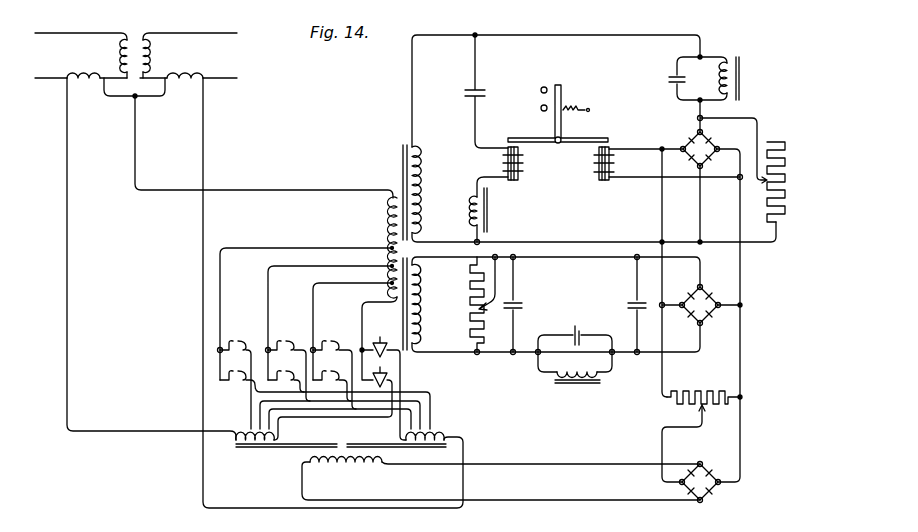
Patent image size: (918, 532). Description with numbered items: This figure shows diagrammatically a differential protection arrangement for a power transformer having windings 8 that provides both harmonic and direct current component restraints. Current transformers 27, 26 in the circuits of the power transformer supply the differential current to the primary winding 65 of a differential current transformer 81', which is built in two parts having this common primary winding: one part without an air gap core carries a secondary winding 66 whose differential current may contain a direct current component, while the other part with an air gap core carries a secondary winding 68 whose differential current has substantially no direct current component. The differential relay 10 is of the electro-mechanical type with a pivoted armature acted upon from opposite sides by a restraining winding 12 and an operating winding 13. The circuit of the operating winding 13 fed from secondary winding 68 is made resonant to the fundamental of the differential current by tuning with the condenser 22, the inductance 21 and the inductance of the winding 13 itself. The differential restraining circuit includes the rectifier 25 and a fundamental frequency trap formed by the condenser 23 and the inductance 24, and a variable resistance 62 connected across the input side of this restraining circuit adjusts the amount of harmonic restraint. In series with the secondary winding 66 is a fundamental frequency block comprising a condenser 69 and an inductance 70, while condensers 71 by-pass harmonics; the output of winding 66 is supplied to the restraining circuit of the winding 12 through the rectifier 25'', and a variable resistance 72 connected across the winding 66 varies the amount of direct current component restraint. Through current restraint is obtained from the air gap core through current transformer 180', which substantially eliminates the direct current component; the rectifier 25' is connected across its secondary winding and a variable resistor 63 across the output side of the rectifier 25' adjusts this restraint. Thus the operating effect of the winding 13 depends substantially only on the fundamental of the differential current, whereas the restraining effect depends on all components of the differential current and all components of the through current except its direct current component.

The current transformer 27 is at (123, 55).
The current transformer 26 is at (147, 55).
The power transformer winding 8 is at (86, 80).
The differential current transformer 81' is at (385, 247).
The primary winding 65 is at (387, 220).
The secondary winding 68 is at (420, 184).
The secondary winding 66 is at (420, 304).
The inductance 21 is at (468, 213).
The condenser 22 is at (487, 94).
The operating winding 13 is at (505, 163).
The differential relay 10 is at (569, 174).
The restraining winding 12 is at (612, 162).
The condenser 23 is at (668, 80).
The inductance 24 is at (742, 77).
The rectifier 25 is at (712, 146).
The variable resistance 62 is at (786, 173).
The rectifier 25'' is at (708, 296).
The condensers 71 is at (523, 306).
The condenser 69 is at (578, 327).
The inductance 70 is at (556, 377).
The variable resistance 72 is at (468, 312).
The variable resistor 63 is at (700, 391).
The rectifier 25' is at (714, 487).
The through current transformer 180' is at (341, 440).